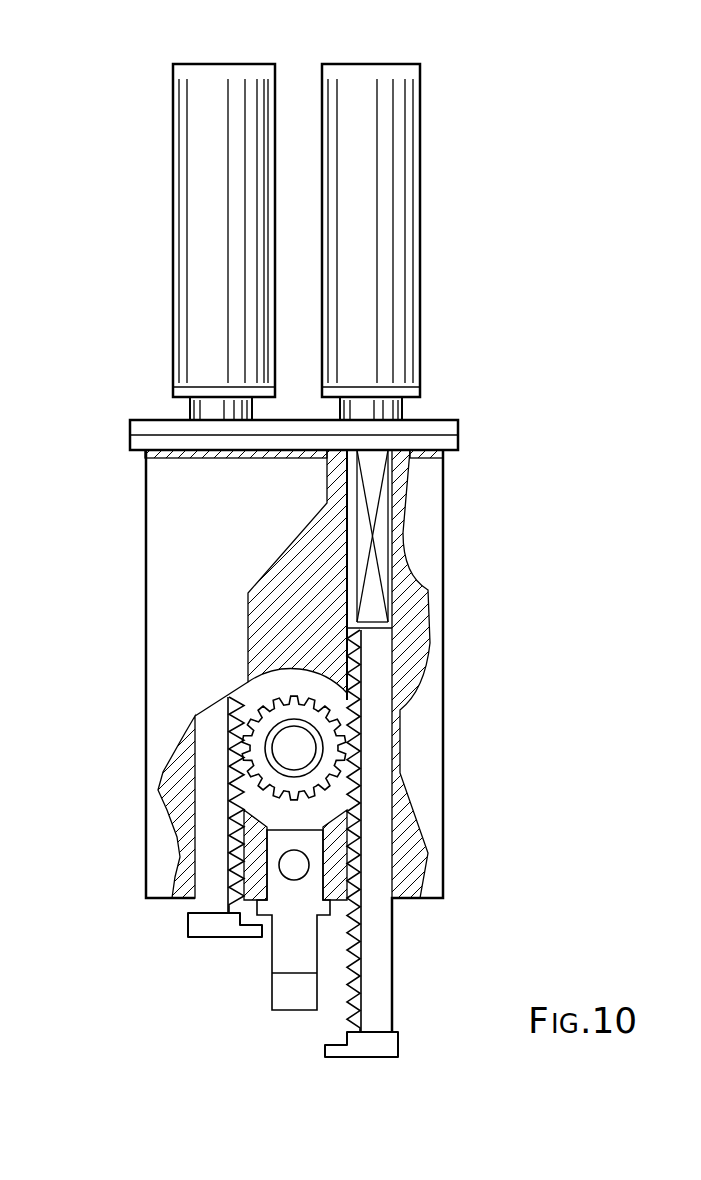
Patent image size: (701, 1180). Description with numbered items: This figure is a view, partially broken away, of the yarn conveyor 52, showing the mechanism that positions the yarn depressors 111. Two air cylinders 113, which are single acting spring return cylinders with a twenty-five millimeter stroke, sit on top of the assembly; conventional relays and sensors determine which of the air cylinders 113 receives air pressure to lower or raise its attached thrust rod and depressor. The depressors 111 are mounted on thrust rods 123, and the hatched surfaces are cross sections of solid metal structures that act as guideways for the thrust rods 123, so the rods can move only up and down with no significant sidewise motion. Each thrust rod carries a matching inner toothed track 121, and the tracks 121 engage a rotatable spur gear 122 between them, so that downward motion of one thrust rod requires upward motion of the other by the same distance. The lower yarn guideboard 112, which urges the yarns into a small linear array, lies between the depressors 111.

The yarn conveyor 52 is at (488, 585).
The air cylinders 113 is at (215, 300).
The thrust rods 123 is at (210, 823).
The rotatable spur gear 122 is at (257, 718).
The inner toothed tracks 121 is at (232, 873).
The yarn depressors 111 is at (325, 1052).
The lower yarn guideboard 112 is at (290, 997).